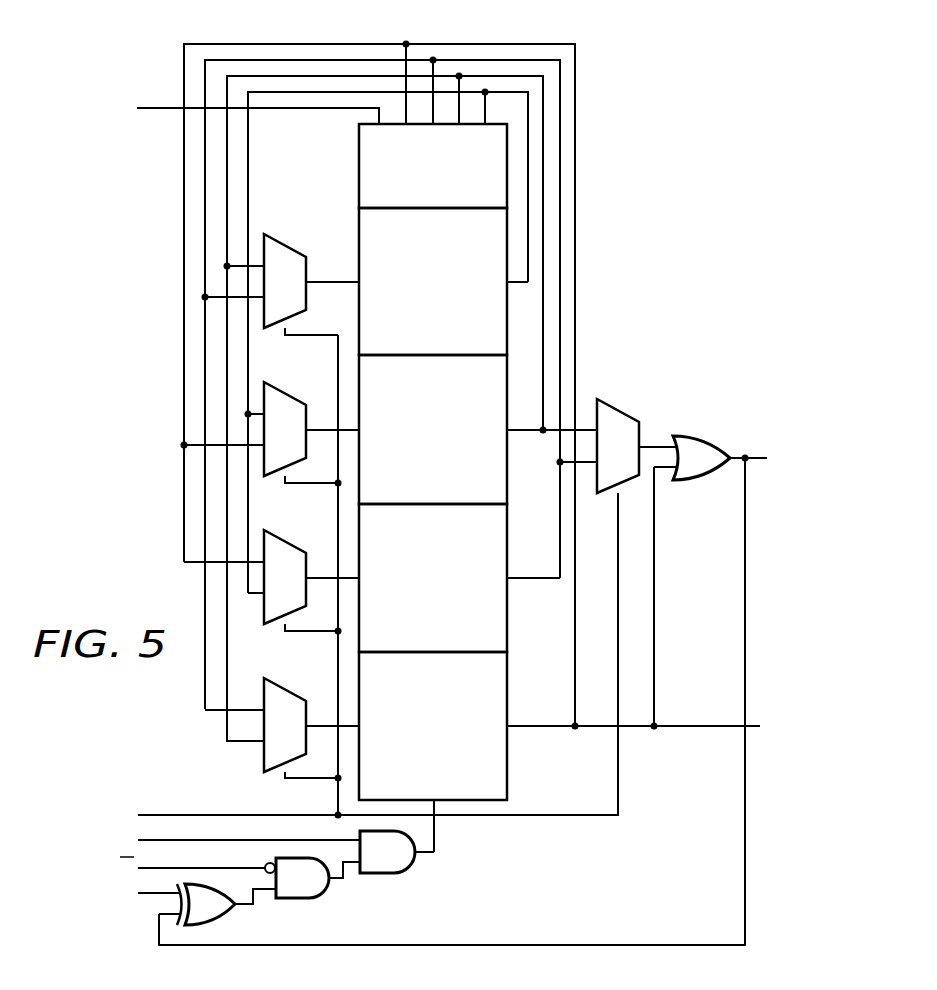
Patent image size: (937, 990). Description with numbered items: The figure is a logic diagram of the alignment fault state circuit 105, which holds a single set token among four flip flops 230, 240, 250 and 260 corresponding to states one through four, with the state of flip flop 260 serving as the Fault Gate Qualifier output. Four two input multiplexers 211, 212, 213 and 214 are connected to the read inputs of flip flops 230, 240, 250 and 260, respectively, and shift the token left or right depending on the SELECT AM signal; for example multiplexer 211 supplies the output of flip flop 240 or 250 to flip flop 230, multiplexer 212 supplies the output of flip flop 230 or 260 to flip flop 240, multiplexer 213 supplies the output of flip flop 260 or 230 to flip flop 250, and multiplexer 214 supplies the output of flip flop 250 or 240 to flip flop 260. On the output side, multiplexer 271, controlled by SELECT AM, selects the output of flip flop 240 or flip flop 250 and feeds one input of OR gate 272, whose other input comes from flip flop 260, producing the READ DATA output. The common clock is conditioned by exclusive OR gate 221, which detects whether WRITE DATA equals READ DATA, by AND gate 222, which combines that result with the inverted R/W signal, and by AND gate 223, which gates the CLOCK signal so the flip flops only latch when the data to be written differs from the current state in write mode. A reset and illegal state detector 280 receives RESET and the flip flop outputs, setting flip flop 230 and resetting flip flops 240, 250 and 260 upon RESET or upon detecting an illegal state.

The alignment fault state circuit 105 is at (670, 173).
The input multiplexer 211 is at (287, 246).
The input multiplexer 212 is at (287, 394).
The input multiplexer 213 is at (287, 542).
The input multiplexer 214 is at (287, 690).
The exclusive OR gate 221 is at (226, 917).
The AND gate 222 is at (321, 897).
The AND gate 223 is at (408, 870).
The flip flop 230 is at (443, 281).
The flip flop 240 is at (478, 429).
The flip flop 250 is at (459, 578).
The flip flop 260 is at (433, 752).
The multiplexer 271 is at (619, 409).
The OR gate 272 is at (688, 437).
The reset and illegal state detector 280 is at (359, 165).